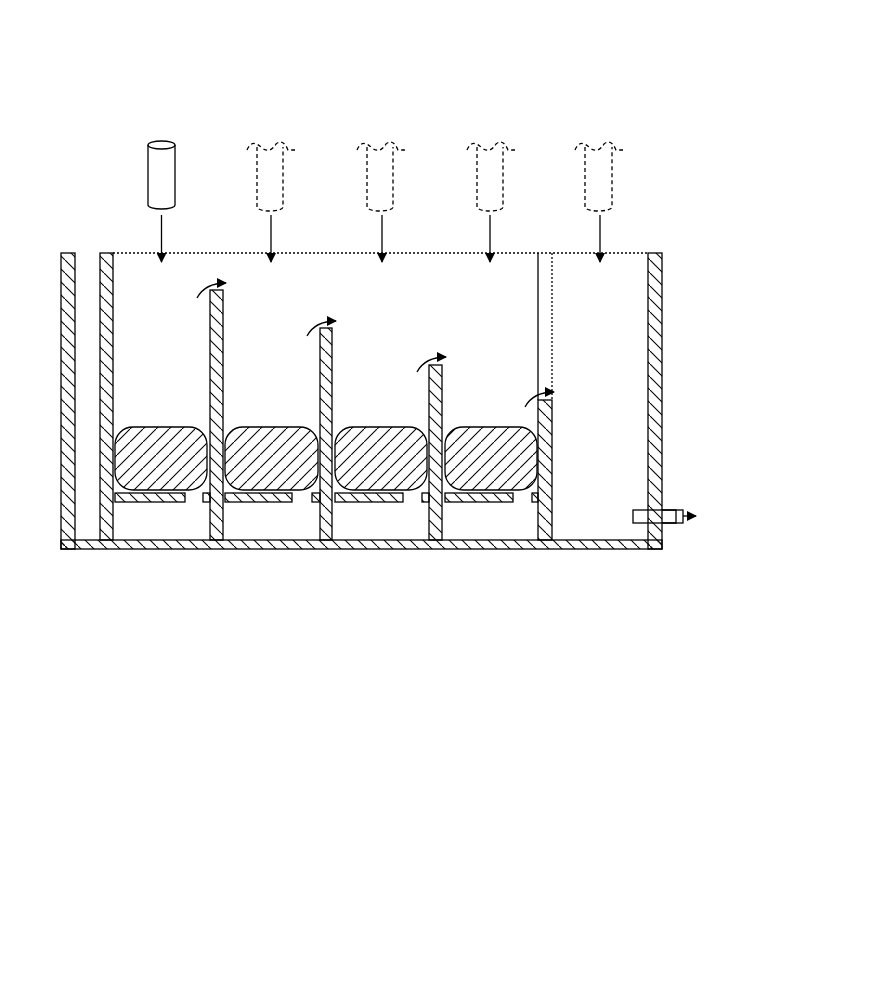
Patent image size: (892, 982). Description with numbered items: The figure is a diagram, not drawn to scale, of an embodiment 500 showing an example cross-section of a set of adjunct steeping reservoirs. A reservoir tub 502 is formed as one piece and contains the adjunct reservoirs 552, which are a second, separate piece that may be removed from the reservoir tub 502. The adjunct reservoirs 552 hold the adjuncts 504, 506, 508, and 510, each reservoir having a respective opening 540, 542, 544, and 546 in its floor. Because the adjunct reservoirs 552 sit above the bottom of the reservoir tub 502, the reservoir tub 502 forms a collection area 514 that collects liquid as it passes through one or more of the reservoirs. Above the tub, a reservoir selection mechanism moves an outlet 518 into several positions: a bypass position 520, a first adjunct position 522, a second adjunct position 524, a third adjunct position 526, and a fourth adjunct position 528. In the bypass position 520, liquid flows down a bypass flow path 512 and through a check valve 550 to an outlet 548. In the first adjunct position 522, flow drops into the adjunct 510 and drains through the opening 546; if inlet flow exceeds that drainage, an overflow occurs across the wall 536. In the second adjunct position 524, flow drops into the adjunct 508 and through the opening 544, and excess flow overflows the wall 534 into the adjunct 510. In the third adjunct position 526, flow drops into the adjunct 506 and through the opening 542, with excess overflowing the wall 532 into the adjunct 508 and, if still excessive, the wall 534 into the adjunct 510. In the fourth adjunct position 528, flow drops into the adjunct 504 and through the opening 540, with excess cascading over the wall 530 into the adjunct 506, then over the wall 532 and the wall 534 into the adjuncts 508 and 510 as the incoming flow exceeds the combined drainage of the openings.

The embodiment 500 is at (266, 802).
The reservoir tub 502 is at (662, 268).
The adjunct 504 is at (168, 483).
The adjunct 506 is at (285, 485).
The adjunct 508 is at (398, 485).
The adjunct 510 is at (508, 485).
The bypass flow path 512 is at (602, 370).
The collection area 514 is at (140, 523).
The outlet 518 is at (148, 165).
The bypass position 520 is at (613, 160).
The first adjunct position 522 is at (490, 145).
The second adjunct position 524 is at (380, 145).
The third adjunct position 526 is at (268, 145).
The fourth adjunct position 528 is at (158, 143).
The wall 530 is at (223, 318).
The wall 532 is at (332, 355).
The wall 534 is at (442, 390).
The wall 536 is at (552, 415).
The opening 540 is at (192, 498).
The opening 542 is at (305, 498).
The opening 544 is at (418, 498).
The opening 546 is at (555, 497).
The outlet 548 is at (699, 506).
The check valve 550 is at (673, 525).
The adjunct reservoirs 552 is at (386, 485).